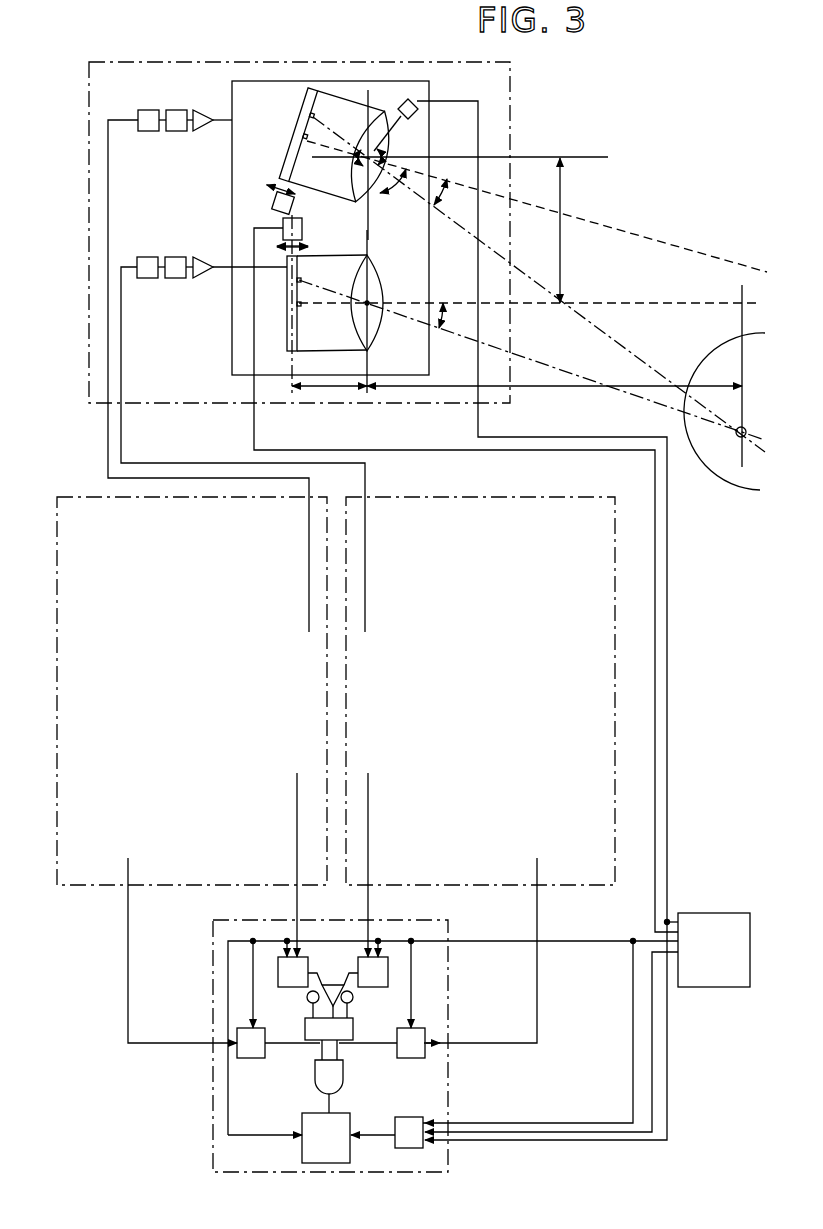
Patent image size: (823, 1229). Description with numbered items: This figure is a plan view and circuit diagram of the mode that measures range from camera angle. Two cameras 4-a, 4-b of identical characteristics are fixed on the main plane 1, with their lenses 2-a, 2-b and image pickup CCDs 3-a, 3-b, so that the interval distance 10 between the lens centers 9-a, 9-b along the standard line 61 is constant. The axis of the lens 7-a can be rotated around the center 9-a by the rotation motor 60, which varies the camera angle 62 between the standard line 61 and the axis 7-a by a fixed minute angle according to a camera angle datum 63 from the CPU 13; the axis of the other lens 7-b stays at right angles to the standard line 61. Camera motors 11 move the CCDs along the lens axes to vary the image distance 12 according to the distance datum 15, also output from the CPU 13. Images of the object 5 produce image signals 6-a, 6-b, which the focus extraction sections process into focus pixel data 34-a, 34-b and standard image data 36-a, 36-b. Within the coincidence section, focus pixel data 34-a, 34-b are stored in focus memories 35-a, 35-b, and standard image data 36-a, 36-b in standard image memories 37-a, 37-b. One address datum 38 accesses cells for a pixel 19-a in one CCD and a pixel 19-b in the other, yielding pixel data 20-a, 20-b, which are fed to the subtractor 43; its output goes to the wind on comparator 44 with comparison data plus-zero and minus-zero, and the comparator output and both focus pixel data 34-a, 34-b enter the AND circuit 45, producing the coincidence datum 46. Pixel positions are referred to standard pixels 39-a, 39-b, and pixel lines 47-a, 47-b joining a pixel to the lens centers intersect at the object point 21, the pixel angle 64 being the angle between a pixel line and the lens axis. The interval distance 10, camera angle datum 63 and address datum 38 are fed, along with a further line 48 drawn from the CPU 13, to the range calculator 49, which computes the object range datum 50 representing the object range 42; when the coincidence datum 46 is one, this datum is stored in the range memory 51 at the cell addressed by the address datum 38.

The main plane 1 is at (243, 166).
The lens of first camera 2-a is at (384, 118).
The lens of second camera 2-b is at (376, 330).
The first image pickup element (CCD) 3-a is at (295, 112).
The second image pickup element (CCD) 3-b is at (243, 304).
The first camera 4-a is at (334, 104).
The second camera 4-b is at (366, 390).
The object 5 is at (746, 482).
The first image signal 6-a is at (108, 420).
The second image signal 6-b is at (121, 422).
The axis of first lens 7-a is at (607, 226).
The axis of second lens 7-b is at (661, 307).
The center of first lens 9-a is at (378, 155).
The center of second lens 9-b is at (378, 305).
The interval distance 10 is at (560, 236).
The camera motor 11 is at (284, 228).
The image distance 12 is at (332, 388).
The central processing unit (CPU) 13 is at (714, 950).
The distance datum 15 is at (254, 430).
The first pixel 19-a is at (310, 113).
The second pixel 19-b is at (297, 280).
The first pixel datum 20-a is at (310, 985).
The second pixel datum 20-b is at (360, 988).
The object point 21 is at (744, 426).
The first focus pixel datum 34-a is at (128, 956).
The second focus pixel datum 34-b is at (537, 986).
The first focus memory 35-a is at (196, 1003).
The second focus memory 35-b is at (458, 1003).
The first standard image datum 36-a is at (297, 902).
The second standard image datum 36-b is at (368, 902).
The first standard image memory 37-a is at (225, 968).
The second standard image memory 37-b is at (434, 968).
The address datum 38 is at (586, 938).
The first standard pixel 39-a is at (306, 140).
The second standard pixel 39-b is at (297, 304).
The object range 42 is at (547, 388).
The subtractor 43 is at (333, 984).
The wind on comparator 44 is at (345, 1032).
The AND circuit 45 is at (342, 1082).
The coincidence datum 46 is at (327, 1105).
The first pixel line 47-a is at (548, 287).
The second pixel line 47-b is at (590, 380).
The control line 48 is at (652, 1088).
The range calculator 49 is at (408, 1117).
The object range datum 50 is at (386, 1136).
The range memory 51 is at (326, 1138).
The rotation motor 60 is at (418, 113).
The standard line 61 is at (363, 107).
The camera angle 62 is at (386, 196).
The camera angle datum 63 is at (472, 100).
The pixel angle 64 is at (446, 208).